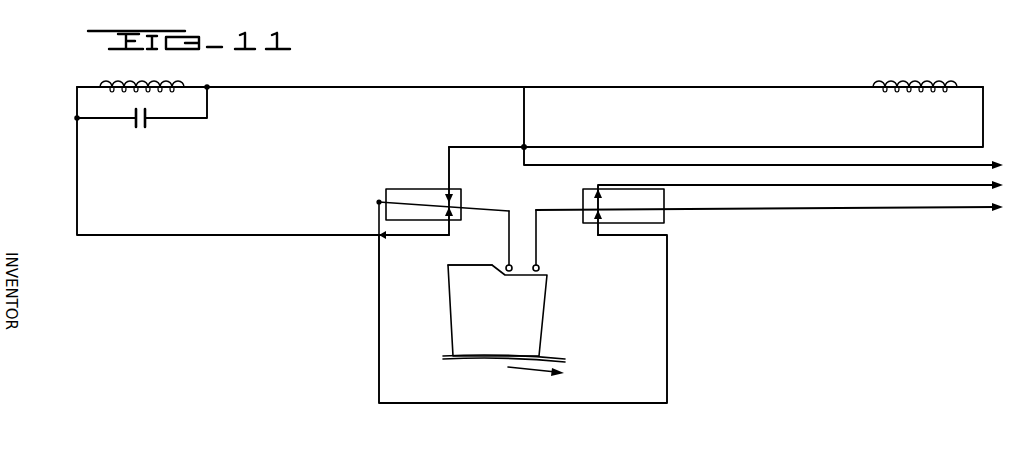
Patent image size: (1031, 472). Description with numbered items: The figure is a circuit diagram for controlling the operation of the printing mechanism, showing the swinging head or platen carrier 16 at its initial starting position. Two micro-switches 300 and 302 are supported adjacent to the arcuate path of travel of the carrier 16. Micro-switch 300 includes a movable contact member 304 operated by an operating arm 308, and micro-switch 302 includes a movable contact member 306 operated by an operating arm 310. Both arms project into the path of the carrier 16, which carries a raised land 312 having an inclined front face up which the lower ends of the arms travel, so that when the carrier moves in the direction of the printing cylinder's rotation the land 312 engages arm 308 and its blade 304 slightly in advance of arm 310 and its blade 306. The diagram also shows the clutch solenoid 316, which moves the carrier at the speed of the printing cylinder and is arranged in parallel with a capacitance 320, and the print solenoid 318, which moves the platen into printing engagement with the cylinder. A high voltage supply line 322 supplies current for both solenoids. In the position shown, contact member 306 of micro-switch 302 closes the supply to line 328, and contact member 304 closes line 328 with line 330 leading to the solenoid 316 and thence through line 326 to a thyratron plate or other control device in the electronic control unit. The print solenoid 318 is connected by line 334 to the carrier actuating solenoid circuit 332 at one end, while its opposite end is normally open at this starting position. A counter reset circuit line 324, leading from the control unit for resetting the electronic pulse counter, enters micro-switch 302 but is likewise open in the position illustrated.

The swinging head or platen carrier 16 is at (556, 310).
The micro-switch 300 is at (390, 189).
The micro-switch 302 is at (665, 218).
The movable contact member 304 is at (424, 202).
The movable contact member 306 is at (558, 208).
The operating arm 308 is at (508, 246).
The operating arm 310 is at (538, 247).
The raised land 312 is at (463, 265).
The clutch solenoid 316 is at (120, 83).
The print solenoid 318 is at (917, 83).
The capacitance 320 is at (145, 128).
The high voltage supply line 322 is at (913, 208).
The counter reset circuit line 324 is at (812, 186).
The line 326 is at (781, 164).
The line 328 is at (667, 318).
The line 330 is at (232, 236).
The carrier actuating solenoid circuit 332 is at (477, 86).
The line 334 is at (670, 147).